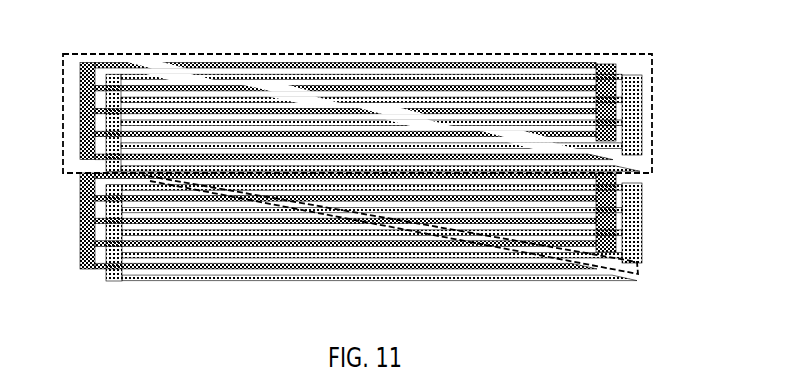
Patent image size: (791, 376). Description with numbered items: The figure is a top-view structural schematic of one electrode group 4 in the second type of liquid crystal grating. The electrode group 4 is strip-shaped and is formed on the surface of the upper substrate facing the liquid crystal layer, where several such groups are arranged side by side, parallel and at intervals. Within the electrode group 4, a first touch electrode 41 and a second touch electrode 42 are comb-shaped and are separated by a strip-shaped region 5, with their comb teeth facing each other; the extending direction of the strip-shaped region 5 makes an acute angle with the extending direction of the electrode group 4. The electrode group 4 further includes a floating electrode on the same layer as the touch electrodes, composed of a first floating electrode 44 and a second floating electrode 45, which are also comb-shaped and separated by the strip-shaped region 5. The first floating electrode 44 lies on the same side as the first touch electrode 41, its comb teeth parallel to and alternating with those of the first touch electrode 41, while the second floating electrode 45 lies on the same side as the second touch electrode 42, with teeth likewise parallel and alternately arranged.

The electrode group 4 is at (653, 73).
The first touch electrode 41 is at (617, 200).
The second touch electrode 42 is at (81, 227).
The first floating electrode 44 is at (627, 230).
The second floating electrode 45 is at (106, 243).
The strip-shaped region 5 is at (641, 275).